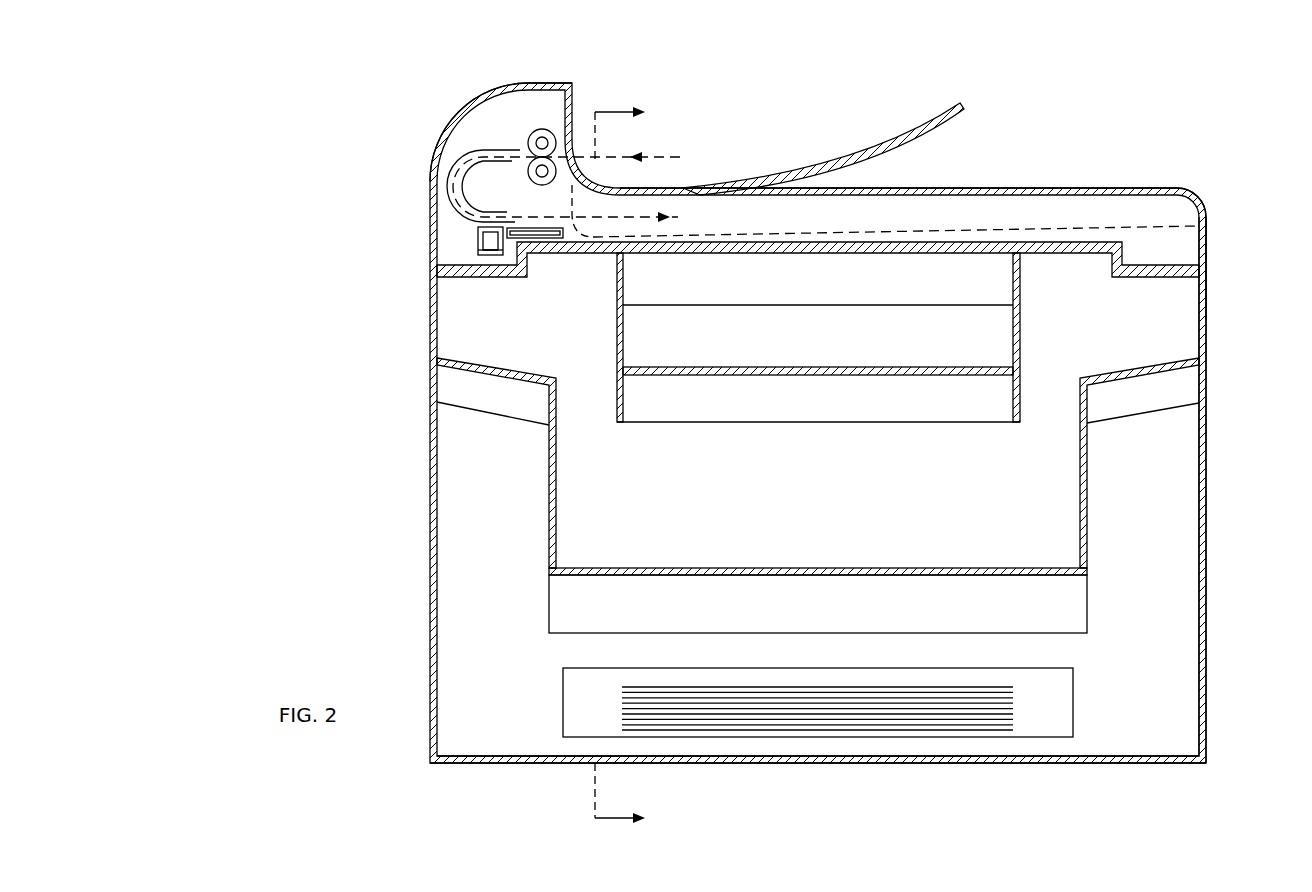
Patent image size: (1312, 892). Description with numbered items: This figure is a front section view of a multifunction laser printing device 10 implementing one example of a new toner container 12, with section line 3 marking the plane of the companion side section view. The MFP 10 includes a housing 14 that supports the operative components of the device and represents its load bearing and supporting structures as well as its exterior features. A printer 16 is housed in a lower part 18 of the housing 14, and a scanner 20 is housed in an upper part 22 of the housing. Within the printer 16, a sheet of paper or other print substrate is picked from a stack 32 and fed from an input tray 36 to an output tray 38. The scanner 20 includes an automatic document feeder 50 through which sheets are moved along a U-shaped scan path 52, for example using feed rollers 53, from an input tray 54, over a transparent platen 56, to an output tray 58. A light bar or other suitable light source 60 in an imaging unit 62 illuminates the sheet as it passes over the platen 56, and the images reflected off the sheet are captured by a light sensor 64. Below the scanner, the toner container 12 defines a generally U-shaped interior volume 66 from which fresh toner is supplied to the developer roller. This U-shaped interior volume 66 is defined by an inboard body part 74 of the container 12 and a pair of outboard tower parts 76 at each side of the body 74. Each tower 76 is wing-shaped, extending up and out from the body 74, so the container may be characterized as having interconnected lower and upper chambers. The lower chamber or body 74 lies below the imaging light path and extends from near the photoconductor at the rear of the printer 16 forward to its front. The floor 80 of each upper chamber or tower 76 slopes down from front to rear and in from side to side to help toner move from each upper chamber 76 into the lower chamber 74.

The section line 3- 3 is at (608, 465).
The multifunction laser printing device 10 is at (1089, 137).
The toner container 12 is at (1115, 405).
The housing 14 is at (1207, 233).
The printer 16 is at (1216, 518).
The lower part 18 is at (1205, 472).
The scanner 20 is at (411, 176).
The upper part 22 is at (478, 93).
The stack 32 is at (953, 688).
The input tray 36 is at (1055, 715).
The output tray 38 is at (772, 304).
The automatic document feeder 50 is at (466, 132).
The U-shaped scan path 52 is at (672, 157).
The feed rollers 53 is at (530, 170).
The input tray 54 is at (884, 136).
The transparent platen 56 is at (492, 232).
The output tray 58 is at (986, 228).
The light source 60 is at (488, 258).
The imaging unit 62 is at (478, 250).
The light sensor 64 is at (533, 240).
The U-shaped interior volume 66 is at (540, 331).
The body part 74 is at (550, 510).
The tower parts 76 is at (492, 400).
The floor 80 is at (490, 368).